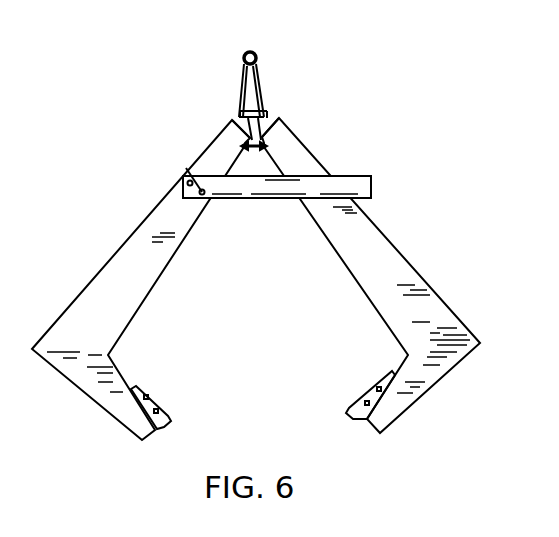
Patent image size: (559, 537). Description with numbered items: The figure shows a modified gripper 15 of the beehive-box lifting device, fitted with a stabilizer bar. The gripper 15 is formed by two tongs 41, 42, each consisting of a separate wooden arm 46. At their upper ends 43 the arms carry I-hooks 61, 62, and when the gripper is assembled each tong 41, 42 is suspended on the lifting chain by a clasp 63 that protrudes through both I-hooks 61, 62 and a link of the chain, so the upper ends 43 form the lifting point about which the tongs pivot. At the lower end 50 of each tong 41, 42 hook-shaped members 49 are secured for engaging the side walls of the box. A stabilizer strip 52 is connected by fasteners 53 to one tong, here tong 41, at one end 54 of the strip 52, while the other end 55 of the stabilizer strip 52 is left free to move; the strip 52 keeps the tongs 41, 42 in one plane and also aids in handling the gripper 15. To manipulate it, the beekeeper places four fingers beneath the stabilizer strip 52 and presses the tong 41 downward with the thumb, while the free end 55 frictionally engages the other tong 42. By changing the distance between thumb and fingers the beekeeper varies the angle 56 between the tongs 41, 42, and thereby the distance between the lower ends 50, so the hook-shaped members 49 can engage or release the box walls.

The gripper 15 is at (92, 145).
The tong 41 is at (84, 268).
The tong 42 is at (426, 262).
The upper ends of the tongs 43 is at (224, 132).
The wooden arm 46 is at (107, 310).
The hook-shaped members 49 is at (152, 401).
The lower end of the tong 50 is at (157, 452).
The stabilizer strip 52 is at (243, 199).
The fasteners 53 is at (190, 181).
The end of the stabilizer strip 54 is at (180, 199).
The free end of the stabilizer strip 55 is at (372, 185).
The angle between the tongs 56 is at (254, 150).
The I-hook 61 is at (238, 110).
The I-hook 62 is at (264, 118).
The clasp 63 is at (260, 66).